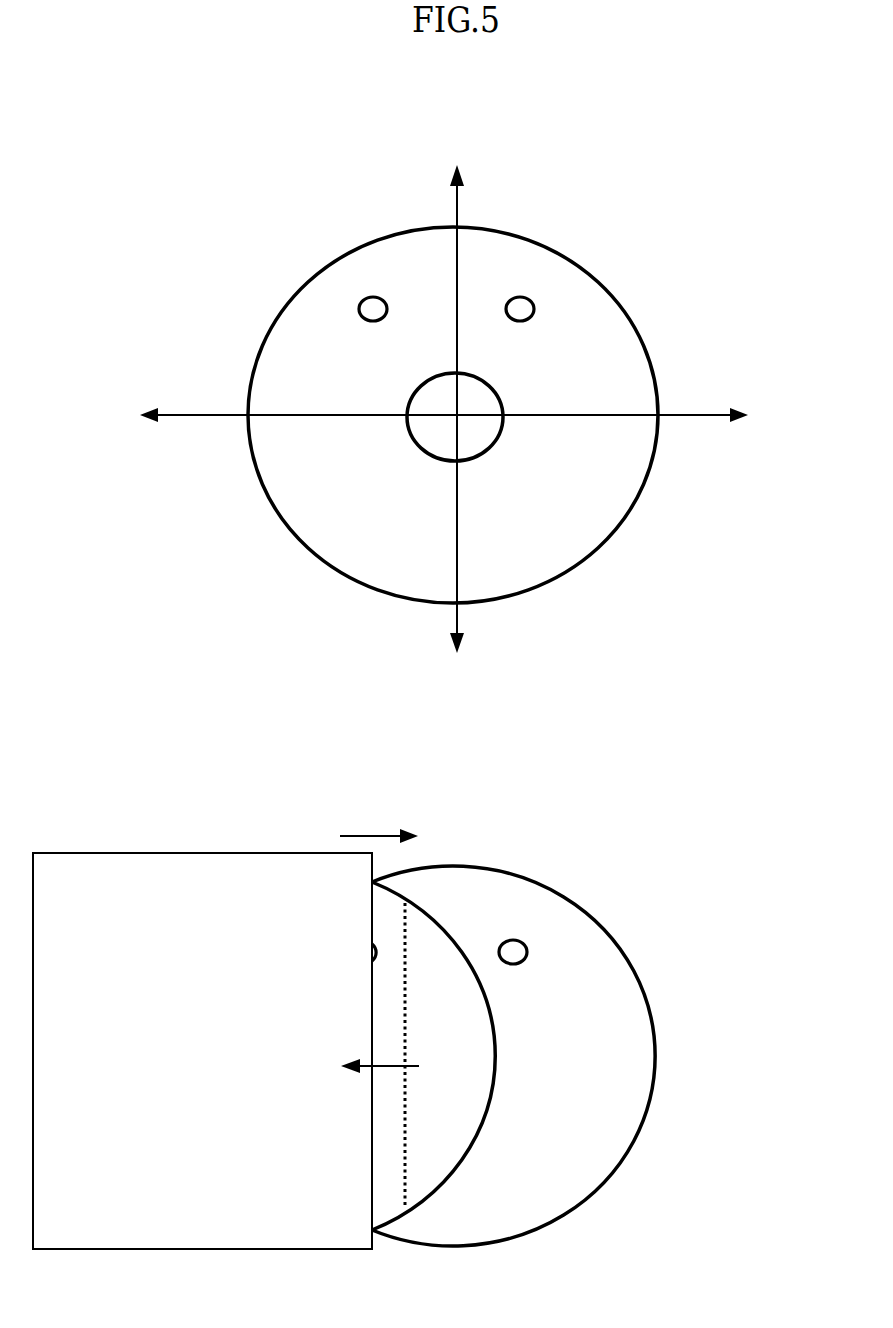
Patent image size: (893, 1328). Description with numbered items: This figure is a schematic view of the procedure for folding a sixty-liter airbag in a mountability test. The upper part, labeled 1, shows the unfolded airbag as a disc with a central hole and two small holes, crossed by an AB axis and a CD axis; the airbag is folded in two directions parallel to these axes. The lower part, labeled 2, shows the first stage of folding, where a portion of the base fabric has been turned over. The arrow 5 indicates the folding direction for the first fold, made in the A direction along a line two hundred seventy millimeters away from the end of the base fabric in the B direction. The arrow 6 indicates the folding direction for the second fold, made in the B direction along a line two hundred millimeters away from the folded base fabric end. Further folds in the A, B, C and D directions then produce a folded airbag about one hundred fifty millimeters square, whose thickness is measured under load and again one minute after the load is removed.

The single yarns 1 is at (448, 399).
The resin 2 is at (344, 1001).
The folding direction 5 is at (354, 833).
The folding direction 6 is at (397, 1065).